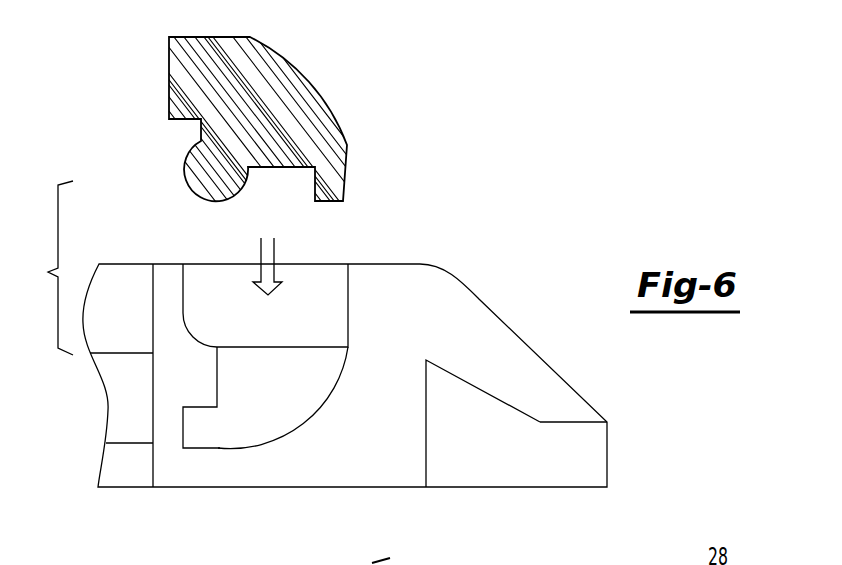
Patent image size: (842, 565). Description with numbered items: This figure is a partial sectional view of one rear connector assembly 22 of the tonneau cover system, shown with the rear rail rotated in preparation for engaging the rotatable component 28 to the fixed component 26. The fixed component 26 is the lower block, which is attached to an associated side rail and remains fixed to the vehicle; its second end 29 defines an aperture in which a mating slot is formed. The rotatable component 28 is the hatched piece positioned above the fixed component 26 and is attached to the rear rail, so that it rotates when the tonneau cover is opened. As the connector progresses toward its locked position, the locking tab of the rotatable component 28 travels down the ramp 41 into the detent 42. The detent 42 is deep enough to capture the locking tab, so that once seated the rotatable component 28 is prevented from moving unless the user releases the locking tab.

The rotatable component 28 is at (321, 92).
The fixed component 26 is at (328, 487).
The rear connector assembly 22 is at (45, 268).
The second end 29 is at (228, 420).
The ramp 41 is at (428, 363).
The detent 42 is at (497, 402).